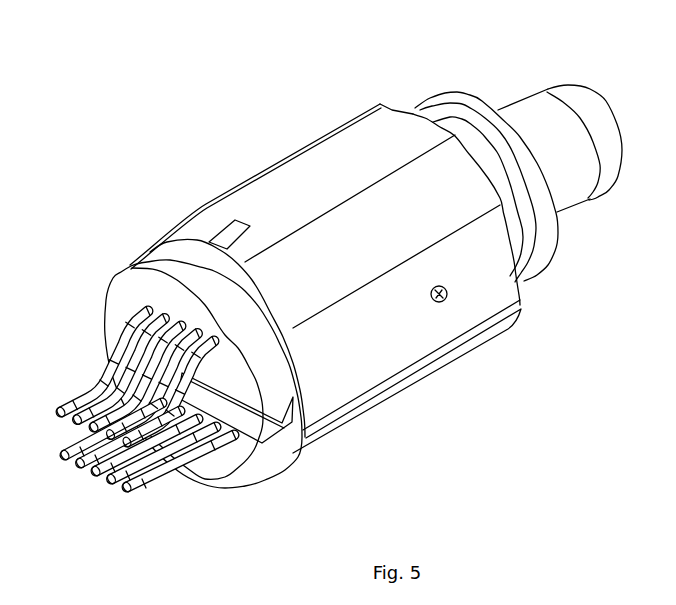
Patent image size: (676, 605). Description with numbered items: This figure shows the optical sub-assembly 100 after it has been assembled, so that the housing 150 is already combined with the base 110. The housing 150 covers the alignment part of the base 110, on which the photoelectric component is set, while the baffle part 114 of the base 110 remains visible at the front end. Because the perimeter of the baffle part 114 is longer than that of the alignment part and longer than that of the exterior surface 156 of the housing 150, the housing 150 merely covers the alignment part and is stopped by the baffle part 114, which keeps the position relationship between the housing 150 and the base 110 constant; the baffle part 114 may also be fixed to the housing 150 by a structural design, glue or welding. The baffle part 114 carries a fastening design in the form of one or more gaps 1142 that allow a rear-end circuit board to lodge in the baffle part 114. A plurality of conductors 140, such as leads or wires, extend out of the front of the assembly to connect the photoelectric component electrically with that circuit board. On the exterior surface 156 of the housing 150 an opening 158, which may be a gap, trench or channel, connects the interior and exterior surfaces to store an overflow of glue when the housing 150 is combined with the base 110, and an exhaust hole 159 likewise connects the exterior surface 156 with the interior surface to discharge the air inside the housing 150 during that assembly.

The optical sub-assembly 100 is at (72, 50).
The base 110 is at (110, 274).
The baffle part 114 is at (301, 440).
The gap 1142 is at (236, 416).
The conductors 140 is at (74, 393).
The housing 150 is at (305, 142).
The exterior surface 156 is at (393, 147).
The opening 158 is at (217, 236).
The exhaust hole 159 is at (441, 301).